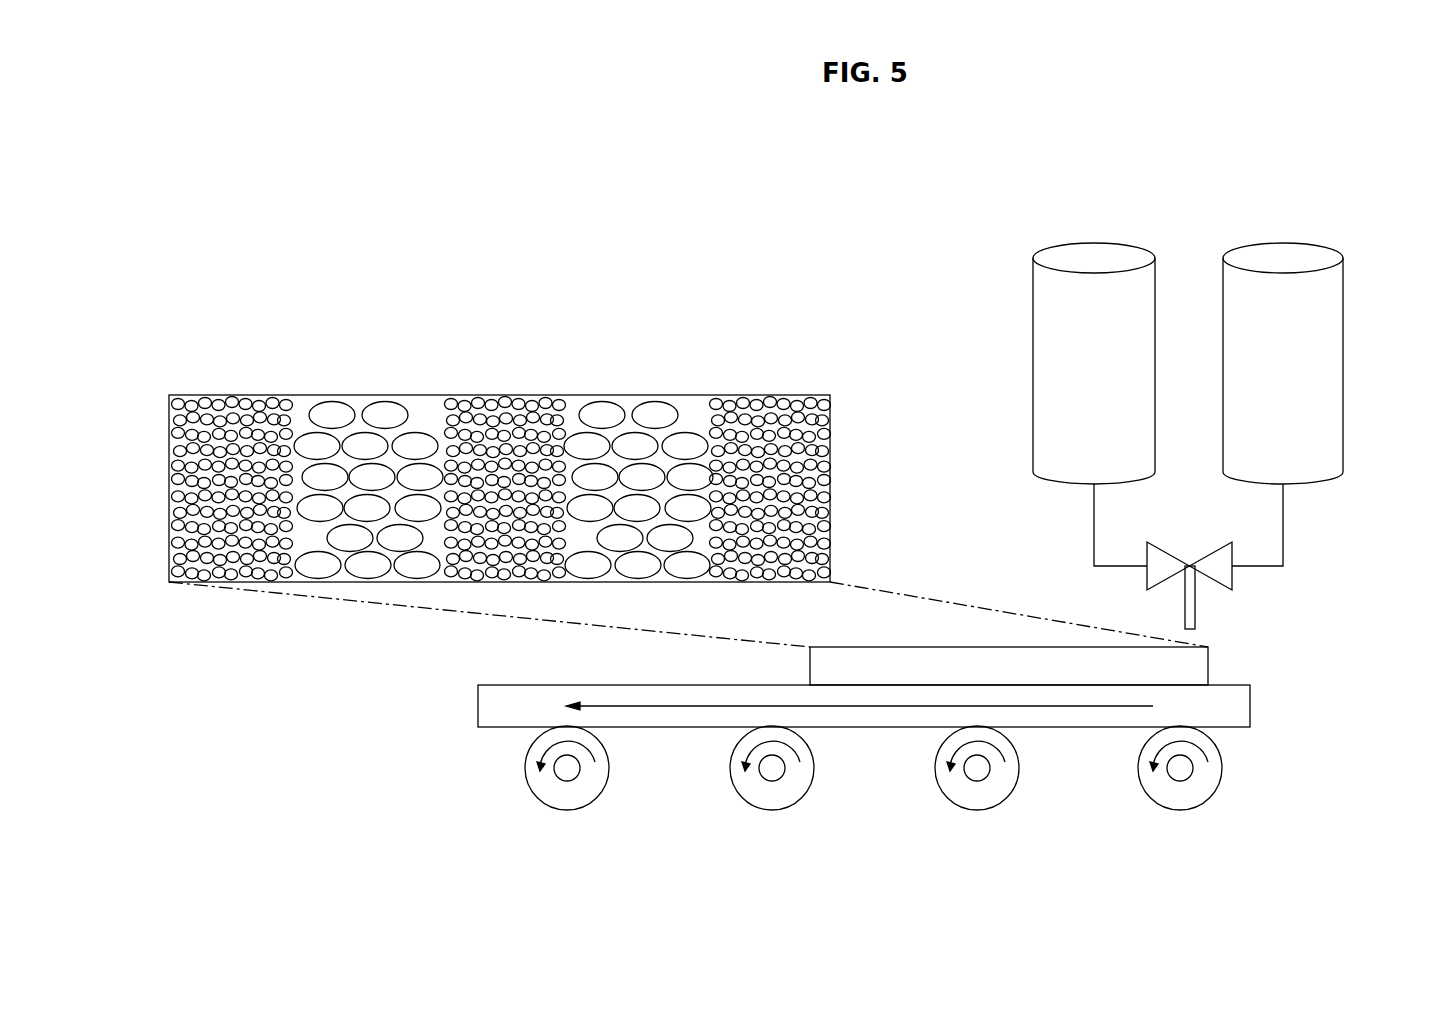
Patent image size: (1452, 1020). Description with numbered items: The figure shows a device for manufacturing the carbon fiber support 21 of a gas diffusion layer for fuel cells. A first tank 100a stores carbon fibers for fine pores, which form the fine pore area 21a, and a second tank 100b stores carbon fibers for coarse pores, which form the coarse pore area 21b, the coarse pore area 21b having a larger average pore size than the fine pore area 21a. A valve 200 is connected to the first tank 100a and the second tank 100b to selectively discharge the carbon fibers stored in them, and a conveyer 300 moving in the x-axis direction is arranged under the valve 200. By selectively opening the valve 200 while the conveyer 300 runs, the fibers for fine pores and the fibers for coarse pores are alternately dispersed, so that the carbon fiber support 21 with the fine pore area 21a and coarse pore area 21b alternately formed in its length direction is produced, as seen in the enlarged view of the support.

The carbon fiber support 21 is at (688, 451).
The fine pore area 21a is at (501, 458).
The coarse pore area 21b is at (503, 457).
The first tank 100a is at (1278, 258).
The second tank 100b is at (1088, 258).
The valve 200 is at (1230, 582).
The conveyer 300 is at (1258, 706).